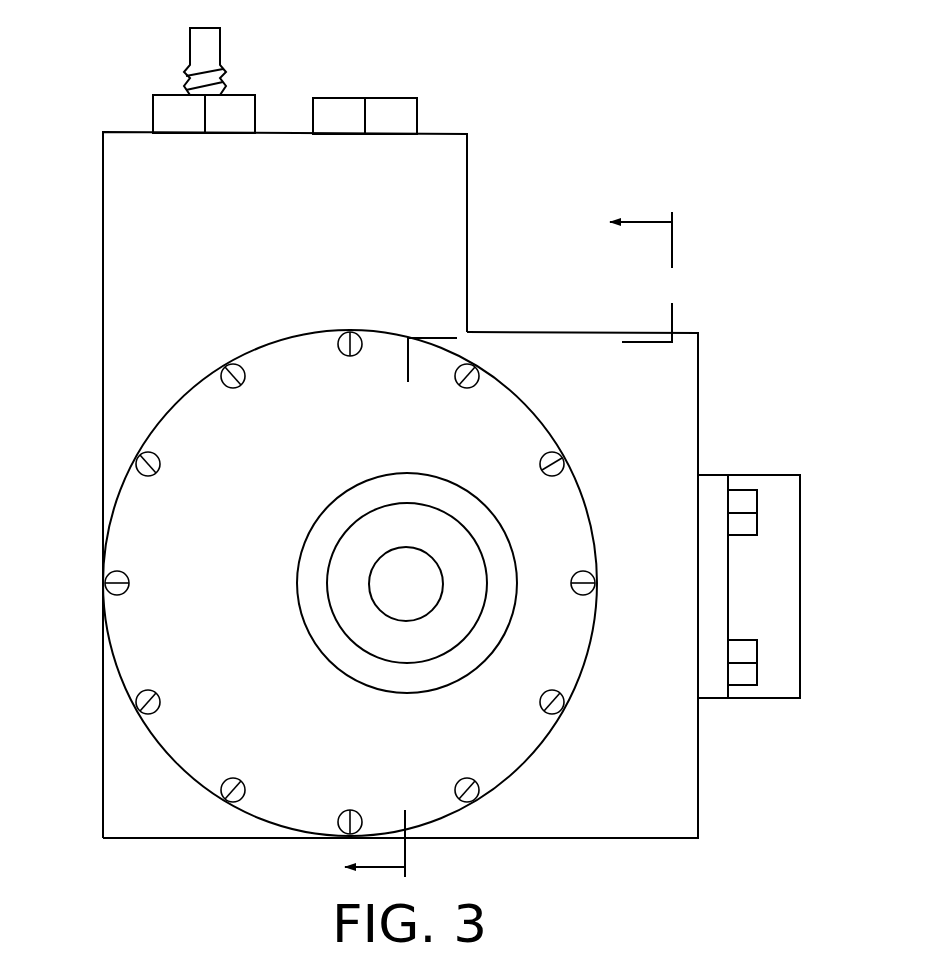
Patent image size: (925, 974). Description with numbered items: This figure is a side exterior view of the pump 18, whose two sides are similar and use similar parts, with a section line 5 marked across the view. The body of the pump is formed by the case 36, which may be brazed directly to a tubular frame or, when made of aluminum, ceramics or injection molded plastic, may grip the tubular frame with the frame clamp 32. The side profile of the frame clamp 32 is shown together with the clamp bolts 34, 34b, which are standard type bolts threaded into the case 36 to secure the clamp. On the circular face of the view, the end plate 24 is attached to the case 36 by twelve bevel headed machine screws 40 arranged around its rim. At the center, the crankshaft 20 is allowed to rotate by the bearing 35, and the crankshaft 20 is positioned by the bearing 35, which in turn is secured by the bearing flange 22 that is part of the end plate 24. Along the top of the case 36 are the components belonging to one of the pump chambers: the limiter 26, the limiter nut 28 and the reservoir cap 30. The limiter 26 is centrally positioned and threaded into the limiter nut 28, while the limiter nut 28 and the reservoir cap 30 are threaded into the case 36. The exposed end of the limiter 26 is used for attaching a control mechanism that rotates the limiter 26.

The pump 18 is at (55, 235).
The crankshaft 20 is at (388, 580).
The bearing flange 22 is at (322, 537).
The end plate 24 is at (518, 438).
The limiter 26 is at (220, 48).
The limiter nut 28 is at (248, 95).
The reservoir cap 30 is at (405, 98).
The frame clamp 32 is at (788, 512).
The clamp bolt 34 is at (757, 503).
The clamp bolt 34b is at (757, 672).
The bearing 35 is at (357, 615).
The case 36 is at (688, 363).
The machine screws 40 is at (235, 388).
The section line 5- 5 is at (525, 545).